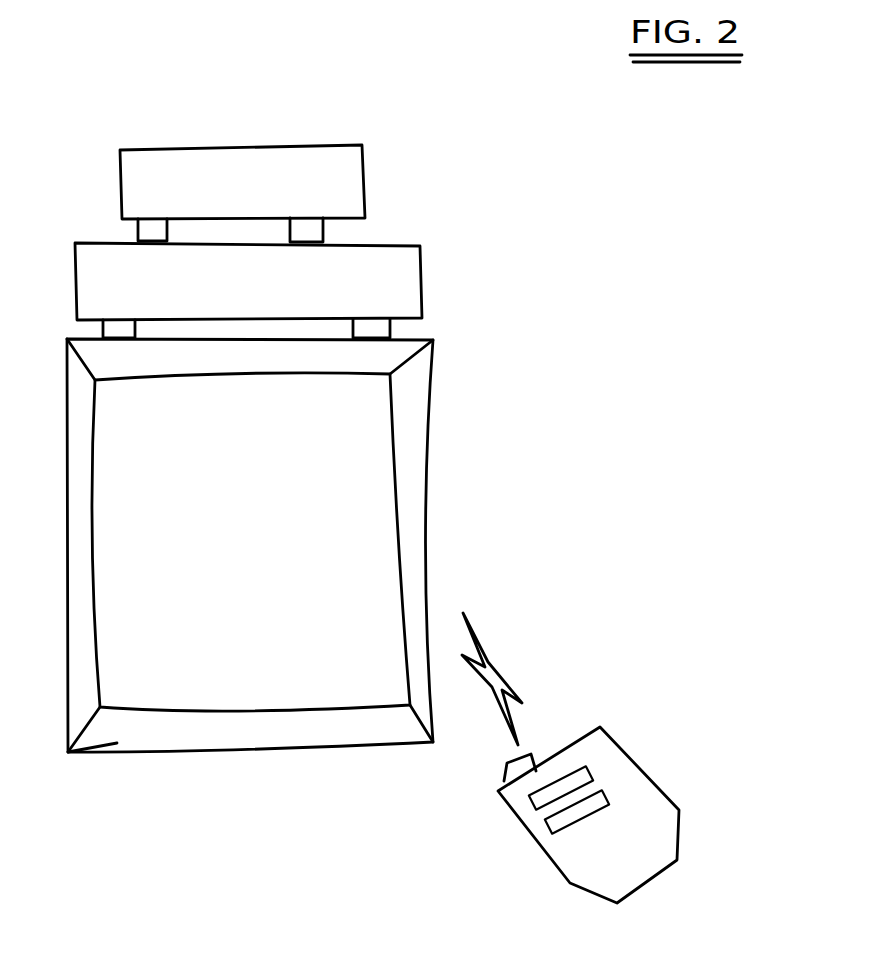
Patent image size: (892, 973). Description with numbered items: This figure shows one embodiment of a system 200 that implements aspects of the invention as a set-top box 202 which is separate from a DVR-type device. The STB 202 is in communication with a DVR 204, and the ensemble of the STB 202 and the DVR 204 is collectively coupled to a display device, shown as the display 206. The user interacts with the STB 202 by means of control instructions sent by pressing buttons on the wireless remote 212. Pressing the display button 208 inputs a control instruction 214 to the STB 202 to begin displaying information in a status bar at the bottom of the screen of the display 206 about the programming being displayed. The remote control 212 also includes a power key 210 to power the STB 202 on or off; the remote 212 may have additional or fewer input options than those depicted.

The system 200 is at (418, 50).
The set-top box 202 is at (278, 146).
The DVR 204 is at (387, 247).
The display 206 is at (425, 427).
The display button 208 is at (567, 767).
The power key 210 is at (547, 838).
The wireless remote 212 is at (606, 786).
The control instruction 214 is at (487, 640).